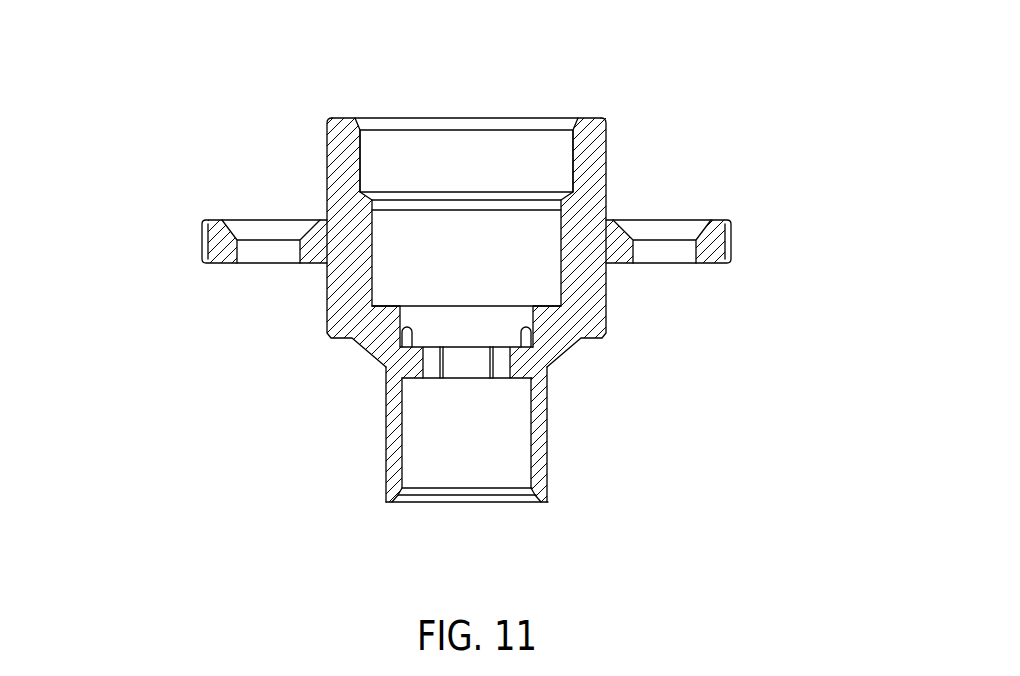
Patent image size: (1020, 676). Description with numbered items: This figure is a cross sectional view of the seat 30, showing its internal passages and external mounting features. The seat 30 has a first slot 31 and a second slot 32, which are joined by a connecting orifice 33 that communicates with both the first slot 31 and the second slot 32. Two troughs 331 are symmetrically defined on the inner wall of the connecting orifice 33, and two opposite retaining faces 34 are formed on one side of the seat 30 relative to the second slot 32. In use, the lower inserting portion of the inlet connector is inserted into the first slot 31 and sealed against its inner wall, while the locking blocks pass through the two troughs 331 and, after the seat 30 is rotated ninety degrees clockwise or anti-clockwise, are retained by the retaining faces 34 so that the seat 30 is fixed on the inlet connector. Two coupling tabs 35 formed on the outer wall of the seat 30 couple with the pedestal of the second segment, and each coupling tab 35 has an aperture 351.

The seat 30 is at (653, 128).
The first slot 31 is at (502, 435).
The second slot 32 is at (460, 245).
The connecting orifice 33 is at (423, 363).
The trough 331 is at (460, 360).
The retaining face 34 is at (407, 328).
The coupling tab 35 is at (208, 244).
The aperture 351 is at (267, 252).